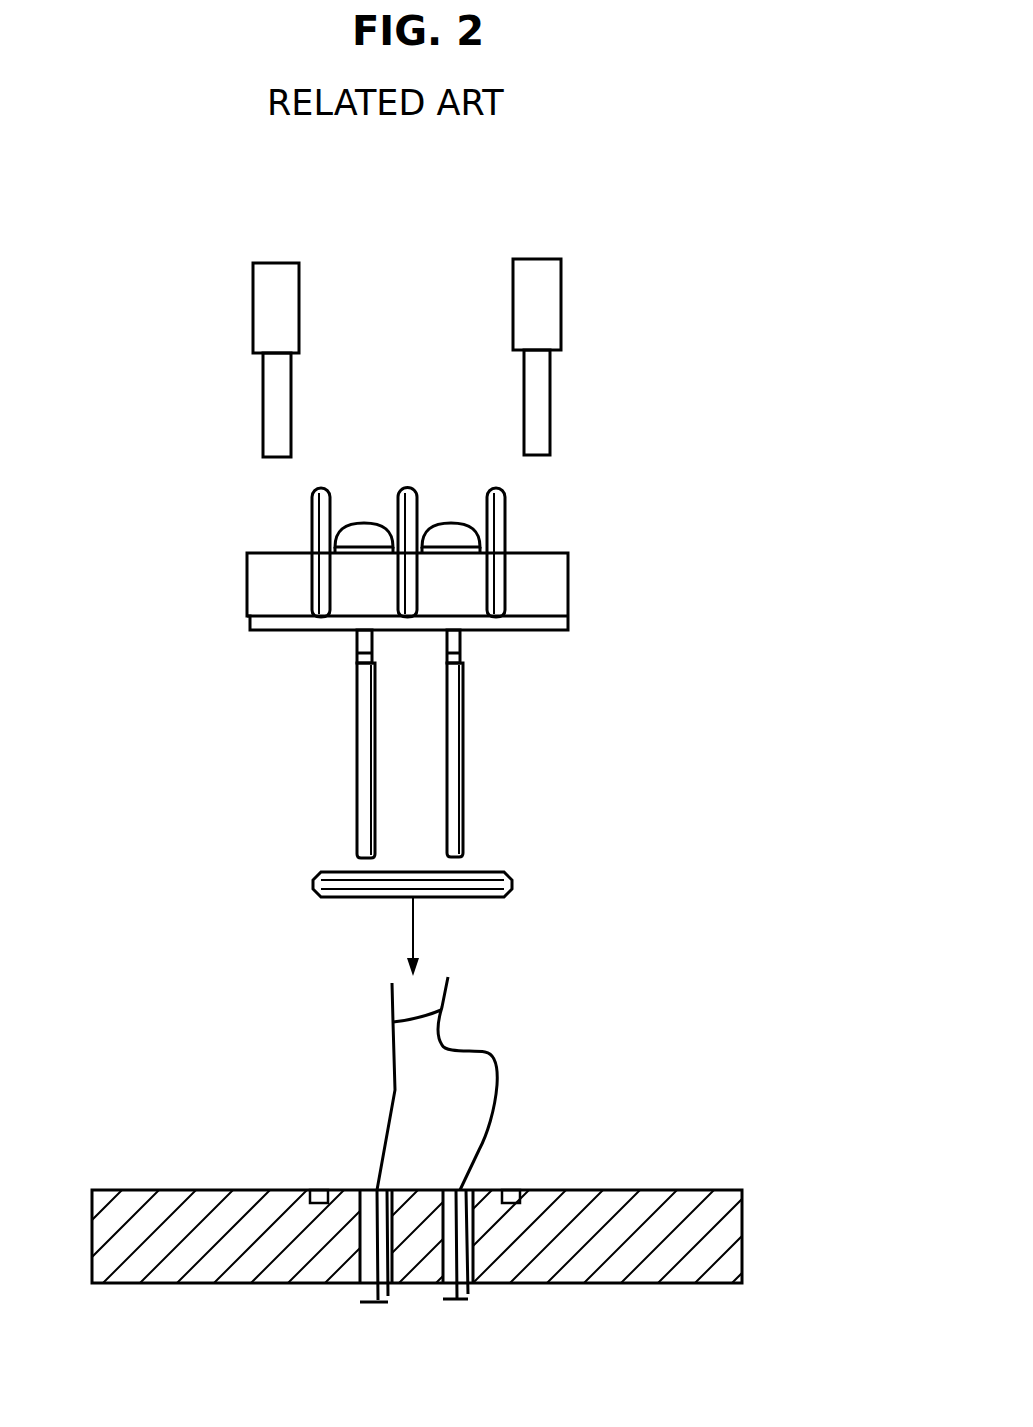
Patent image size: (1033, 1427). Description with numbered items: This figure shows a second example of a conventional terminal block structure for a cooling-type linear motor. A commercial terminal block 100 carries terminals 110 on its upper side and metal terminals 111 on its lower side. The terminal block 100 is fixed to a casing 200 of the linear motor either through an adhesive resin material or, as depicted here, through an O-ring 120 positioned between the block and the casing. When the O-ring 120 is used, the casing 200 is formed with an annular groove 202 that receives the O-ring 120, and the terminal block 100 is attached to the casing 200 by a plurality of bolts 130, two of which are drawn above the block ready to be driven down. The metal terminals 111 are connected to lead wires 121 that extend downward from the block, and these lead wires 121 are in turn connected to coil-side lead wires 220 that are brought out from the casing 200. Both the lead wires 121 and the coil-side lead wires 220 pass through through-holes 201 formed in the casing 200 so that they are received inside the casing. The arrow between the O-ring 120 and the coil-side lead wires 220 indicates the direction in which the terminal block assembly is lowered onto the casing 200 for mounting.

The terminal block 100 is at (570, 580).
The terminals 110 is at (452, 528).
The metal terminals 111 is at (462, 643).
The O-ring 120 is at (512, 878).
The lead wires 121 is at (447, 688).
The bolts 130 is at (561, 300).
The casing 200 is at (650, 1188).
The through-holes 201 is at (457, 1190).
The annular groove 202 is at (322, 1190).
The coil-side lead wires 220 is at (442, 1037).